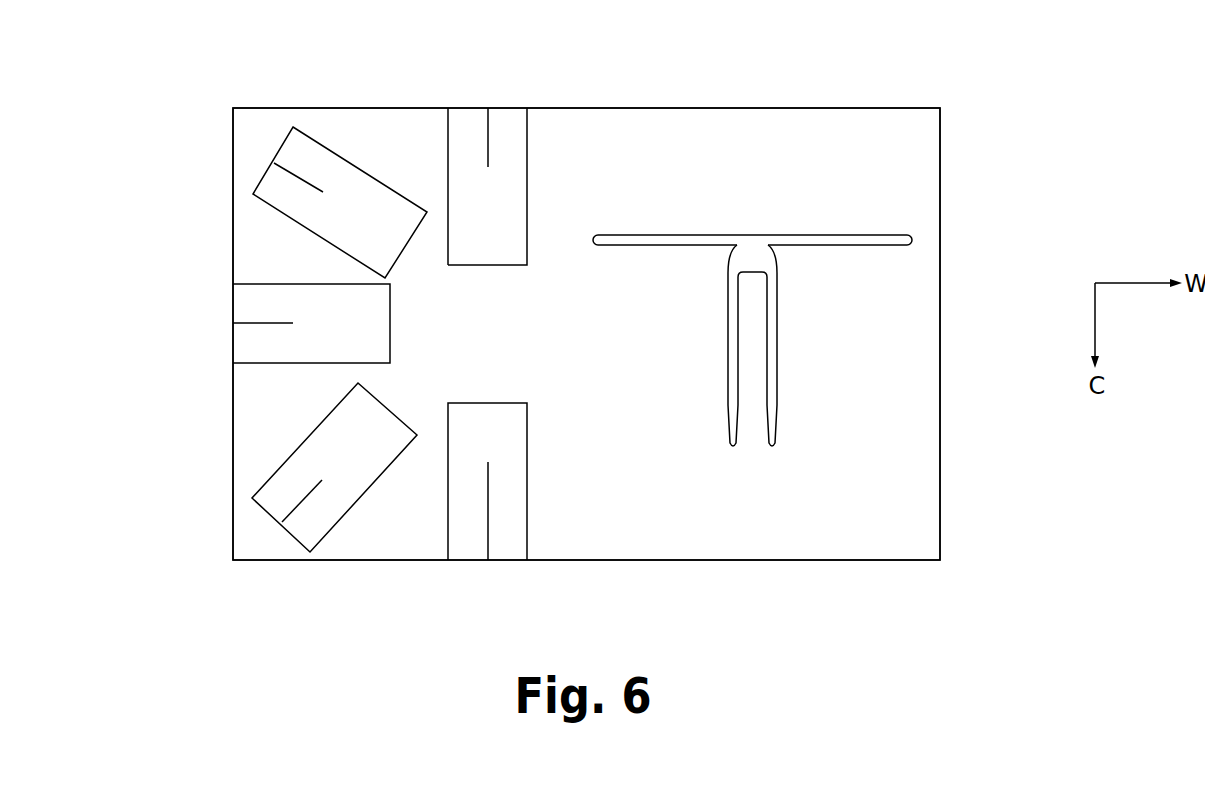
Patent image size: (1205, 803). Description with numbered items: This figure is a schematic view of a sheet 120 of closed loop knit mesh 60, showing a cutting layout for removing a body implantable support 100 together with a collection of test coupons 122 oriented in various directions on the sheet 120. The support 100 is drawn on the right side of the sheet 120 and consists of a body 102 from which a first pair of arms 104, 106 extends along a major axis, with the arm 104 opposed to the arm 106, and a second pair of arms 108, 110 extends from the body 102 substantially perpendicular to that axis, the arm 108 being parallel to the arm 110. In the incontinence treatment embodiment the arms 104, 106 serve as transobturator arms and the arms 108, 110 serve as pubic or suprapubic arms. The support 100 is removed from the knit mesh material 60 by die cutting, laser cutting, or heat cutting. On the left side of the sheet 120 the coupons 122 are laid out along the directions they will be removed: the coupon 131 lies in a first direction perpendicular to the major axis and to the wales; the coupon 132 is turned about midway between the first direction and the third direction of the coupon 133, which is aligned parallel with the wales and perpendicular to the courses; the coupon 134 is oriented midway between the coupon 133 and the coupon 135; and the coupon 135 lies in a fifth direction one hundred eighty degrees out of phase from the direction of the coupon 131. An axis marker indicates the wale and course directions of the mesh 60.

The closed loop knit mesh 60 is at (760, 518).
The support 100 is at (801, 287).
The body 102 is at (762, 255).
The arm 104 is at (655, 242).
The arm 106 is at (867, 243).
The arm 108 is at (730, 368).
The arm 110 is at (772, 363).
The sheet 120 is at (676, 106).
The coupons 122 is at (289, 169).
The coupon 131 is at (513, 162).
The coupon 132 is at (287, 200).
The coupon 133 is at (270, 350).
The coupon 134 is at (327, 500).
The coupon 135 is at (508, 522).